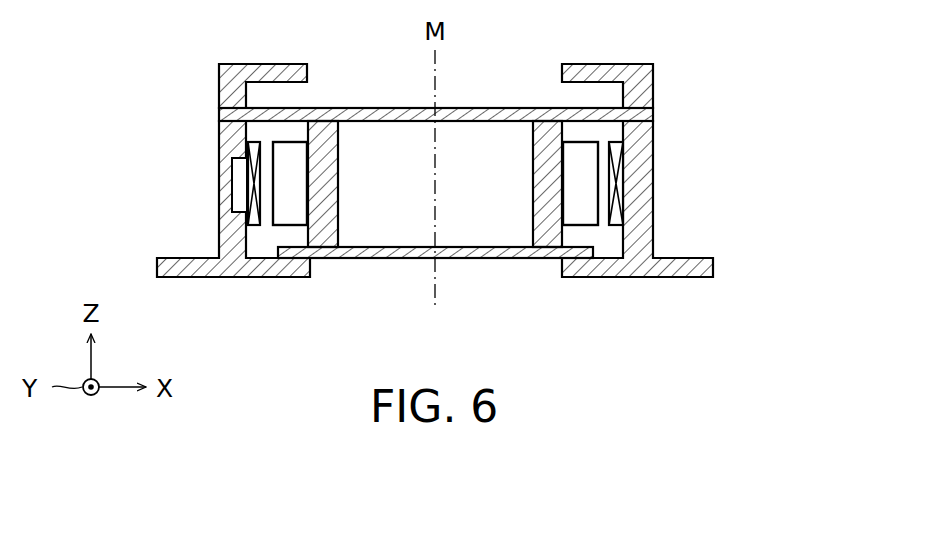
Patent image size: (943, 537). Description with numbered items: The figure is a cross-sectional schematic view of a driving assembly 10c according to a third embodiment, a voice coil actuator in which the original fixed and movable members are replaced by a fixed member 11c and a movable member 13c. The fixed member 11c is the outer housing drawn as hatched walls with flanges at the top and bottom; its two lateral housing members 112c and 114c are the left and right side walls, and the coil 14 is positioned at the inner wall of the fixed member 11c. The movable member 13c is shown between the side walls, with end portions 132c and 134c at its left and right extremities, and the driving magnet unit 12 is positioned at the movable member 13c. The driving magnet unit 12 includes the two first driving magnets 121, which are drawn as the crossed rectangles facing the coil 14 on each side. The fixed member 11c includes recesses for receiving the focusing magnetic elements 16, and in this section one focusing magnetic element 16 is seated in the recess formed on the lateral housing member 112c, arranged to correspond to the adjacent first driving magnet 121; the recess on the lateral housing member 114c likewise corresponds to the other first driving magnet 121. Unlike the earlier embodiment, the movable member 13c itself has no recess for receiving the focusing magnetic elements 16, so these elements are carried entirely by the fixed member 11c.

The driving assembly 10c is at (116, 69).
The fixed member 11c is at (214, 62).
The lateral housing member 112c is at (228, 230).
The lateral housing member 114c is at (642, 202).
The driving magnet unit 12 is at (581, 141).
The first driving magnet 121 is at (252, 158).
The movable member 13c is at (390, 250).
The first end portion of bottom plate 132c is at (297, 239).
The second end portion of bottom plate 134c is at (562, 236).
The coil 14 is at (285, 158).
The focusing magnetic element 16 is at (238, 190).